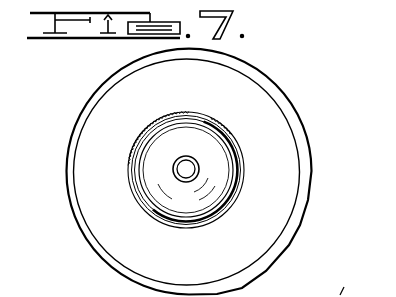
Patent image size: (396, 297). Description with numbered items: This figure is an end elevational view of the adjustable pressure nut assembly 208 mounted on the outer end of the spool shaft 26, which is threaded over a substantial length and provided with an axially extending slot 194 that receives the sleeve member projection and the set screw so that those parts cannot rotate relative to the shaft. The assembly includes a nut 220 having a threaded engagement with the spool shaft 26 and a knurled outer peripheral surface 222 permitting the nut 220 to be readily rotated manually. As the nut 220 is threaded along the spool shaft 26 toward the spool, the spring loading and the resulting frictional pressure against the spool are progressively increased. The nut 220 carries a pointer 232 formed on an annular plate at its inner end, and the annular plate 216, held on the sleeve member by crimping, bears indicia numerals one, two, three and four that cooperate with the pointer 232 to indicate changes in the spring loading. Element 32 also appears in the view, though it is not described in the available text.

The adjustable pressure nut assembly 208 is at (89, 144).
The annular plate 216 is at (280, 112).
The nut 220 is at (196, 126).
The pointer 232 is at (128, 110).
The knurled outer peripheral surface 222 is at (165, 119).
The axially extending slot 194 is at (168, 172).
The spool shaft 26 is at (190, 177).
The housing 32 is at (357, 288).